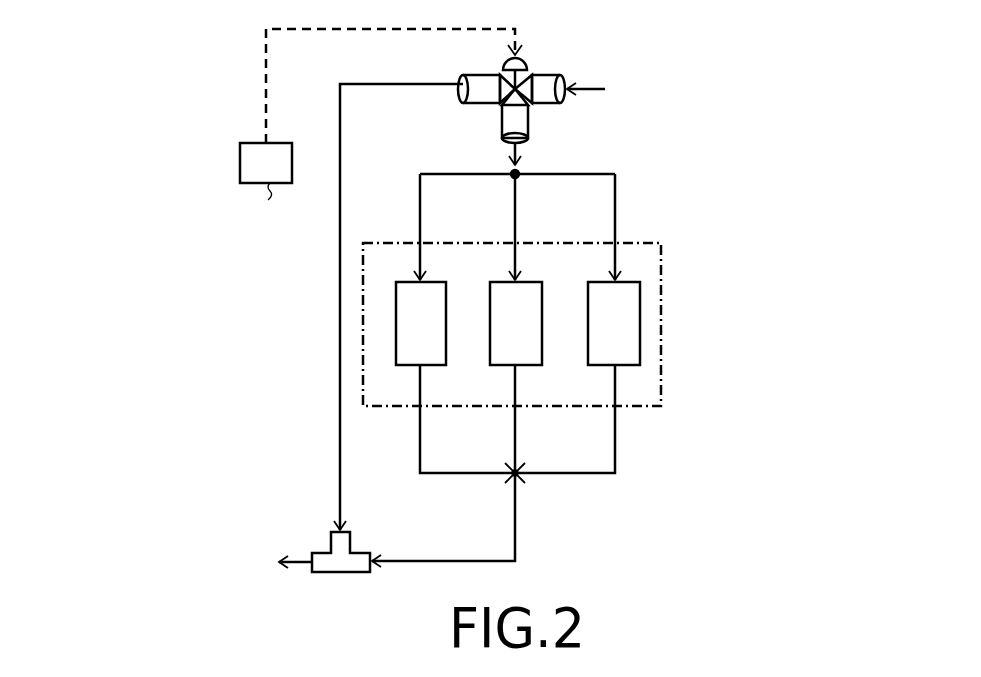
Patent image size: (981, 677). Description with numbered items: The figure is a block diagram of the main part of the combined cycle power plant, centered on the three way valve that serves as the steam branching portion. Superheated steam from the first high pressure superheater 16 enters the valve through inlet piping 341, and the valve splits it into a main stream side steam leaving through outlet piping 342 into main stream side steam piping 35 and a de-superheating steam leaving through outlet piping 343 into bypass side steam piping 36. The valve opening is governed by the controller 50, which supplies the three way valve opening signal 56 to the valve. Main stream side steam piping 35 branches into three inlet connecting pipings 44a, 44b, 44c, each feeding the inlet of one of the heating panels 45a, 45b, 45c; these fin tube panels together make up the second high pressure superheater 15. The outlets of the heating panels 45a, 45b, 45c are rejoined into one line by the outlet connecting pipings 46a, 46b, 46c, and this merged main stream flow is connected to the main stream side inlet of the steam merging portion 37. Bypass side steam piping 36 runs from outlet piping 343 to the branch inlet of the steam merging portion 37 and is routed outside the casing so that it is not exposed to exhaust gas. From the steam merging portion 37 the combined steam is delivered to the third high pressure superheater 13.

The third high pressure superheater 13 is at (172, 537).
The second high pressure superheater 15 is at (663, 300).
The first high pressure superheater 16 is at (729, 99).
The inlet piping 341 is at (564, 74).
The outlet piping 342 is at (530, 122).
The outlet piping 343 is at (471, 76).
The main stream side steam piping 35 is at (518, 152).
The bypass side steam piping 36 is at (343, 122).
The steam merging portion 37 is at (362, 548).
The inlet connecting piping 44a is at (423, 215).
The inlet connecting piping 44b is at (518, 215).
The inlet connecting piping 44c is at (618, 215).
The heating panel 45a is at (421, 323).
The heating panel 45b is at (516, 323).
The heating panel 45c is at (614, 323).
The outlet connecting piping 46a is at (423, 437).
The outlet connecting piping 46b is at (518, 437).
The outlet connecting piping 46c is at (618, 437).
The controller 50 is at (234, 163).
The three way valve opening signal 56 is at (272, 72).